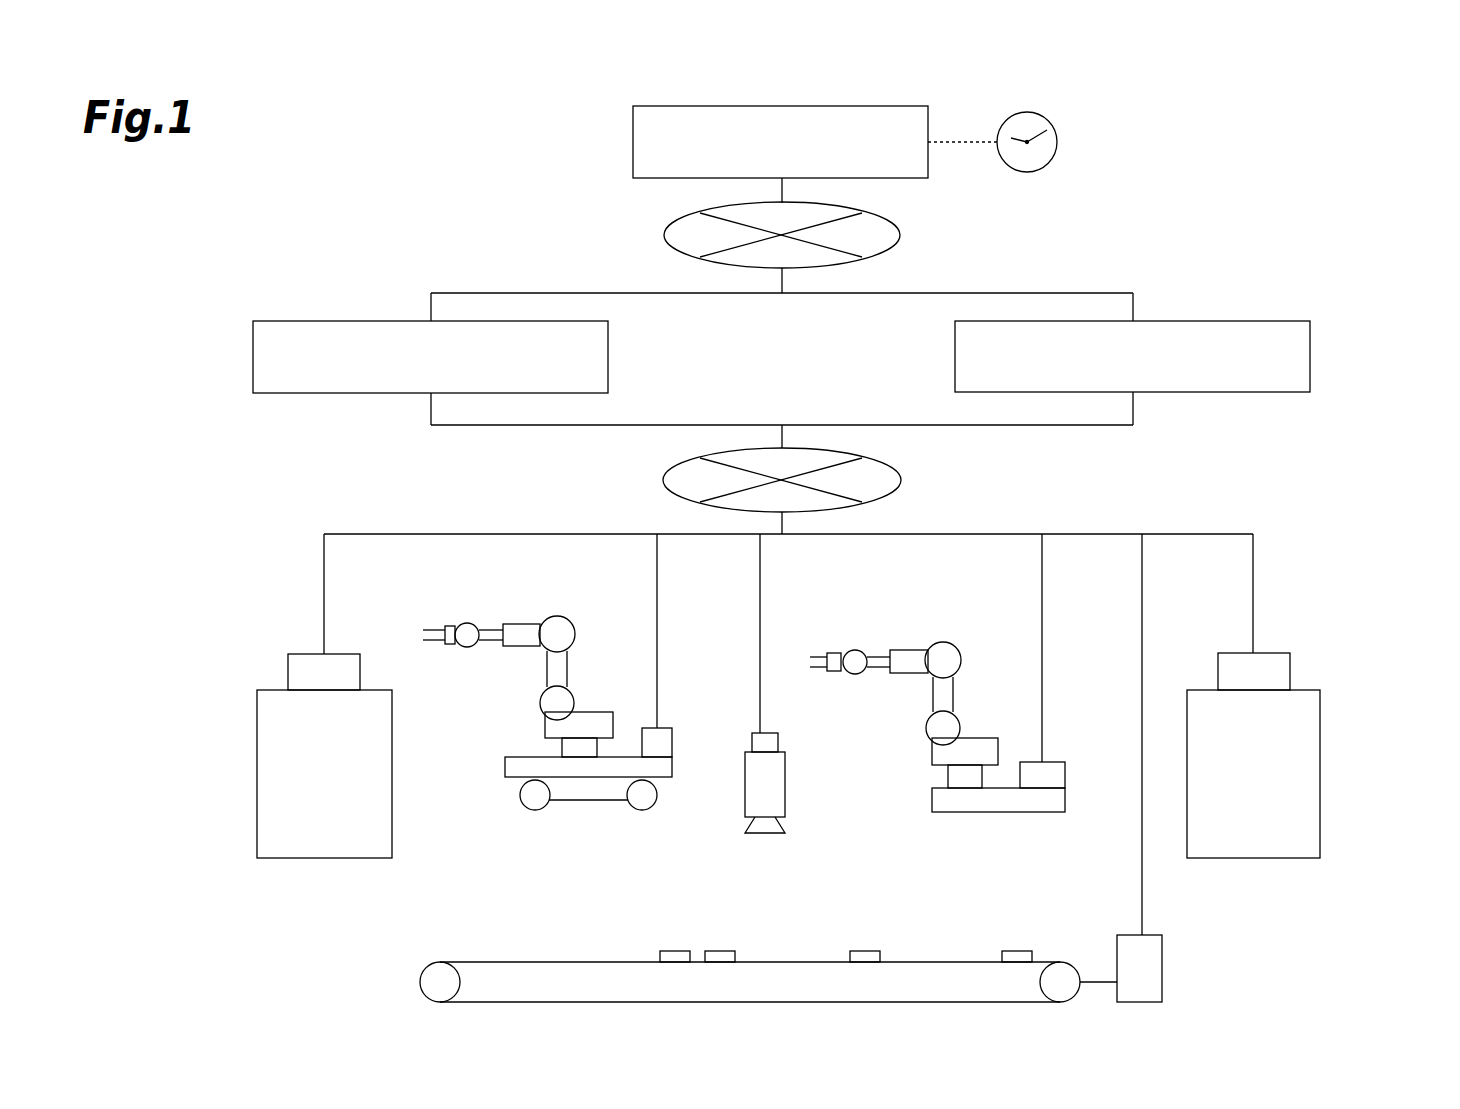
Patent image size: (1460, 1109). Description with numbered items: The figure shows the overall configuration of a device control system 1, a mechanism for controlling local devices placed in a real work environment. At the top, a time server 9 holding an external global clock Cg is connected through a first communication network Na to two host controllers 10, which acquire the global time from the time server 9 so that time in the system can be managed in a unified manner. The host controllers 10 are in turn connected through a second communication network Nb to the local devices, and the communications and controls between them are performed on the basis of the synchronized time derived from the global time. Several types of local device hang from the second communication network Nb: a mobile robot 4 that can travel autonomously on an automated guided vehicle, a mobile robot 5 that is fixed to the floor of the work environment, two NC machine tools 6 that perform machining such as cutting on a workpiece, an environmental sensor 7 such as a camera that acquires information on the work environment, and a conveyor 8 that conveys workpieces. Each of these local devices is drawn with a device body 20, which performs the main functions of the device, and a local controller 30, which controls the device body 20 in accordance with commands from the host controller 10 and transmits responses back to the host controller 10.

The device control system 1 is at (1412, 197).
The time server 9 is at (633, 130).
The global clock Cg is at (1058, 140).
The first communication network Na is at (900, 229).
The second communication network Nb is at (901, 474).
The host controller 10 is at (305, 321).
The NC machine tool 6 is at (236, 621).
The mobile robot 4 is at (520, 608).
The mobile robot 5 is at (893, 635).
The environmental sensor 7 is at (732, 829).
The conveyor 8 is at (648, 946).
The local controller 30 is at (288, 672).
The device body 20 is at (290, 858).